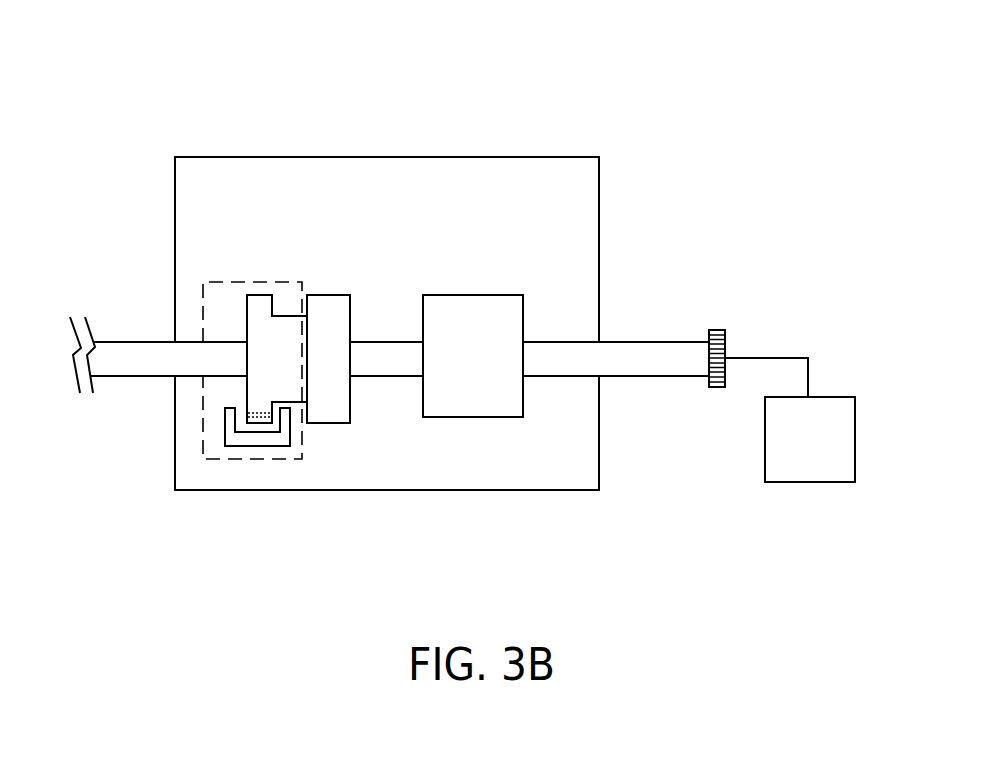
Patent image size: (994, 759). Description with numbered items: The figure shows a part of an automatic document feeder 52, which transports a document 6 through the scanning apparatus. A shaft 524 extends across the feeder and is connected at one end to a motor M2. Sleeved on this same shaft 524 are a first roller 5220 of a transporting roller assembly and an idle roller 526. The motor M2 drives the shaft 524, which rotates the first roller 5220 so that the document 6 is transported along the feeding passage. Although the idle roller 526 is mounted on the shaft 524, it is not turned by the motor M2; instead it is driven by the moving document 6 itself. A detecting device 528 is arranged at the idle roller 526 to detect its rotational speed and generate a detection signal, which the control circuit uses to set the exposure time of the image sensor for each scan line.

The automatic document feeder 52 is at (592, 71).
The document 6 is at (391, 165).
The detecting device 528 is at (258, 460).
The idle roller 526 is at (325, 423).
The first roller 5220 is at (465, 417).
The shaft 524 is at (620, 377).
The motor M2 is at (843, 397).